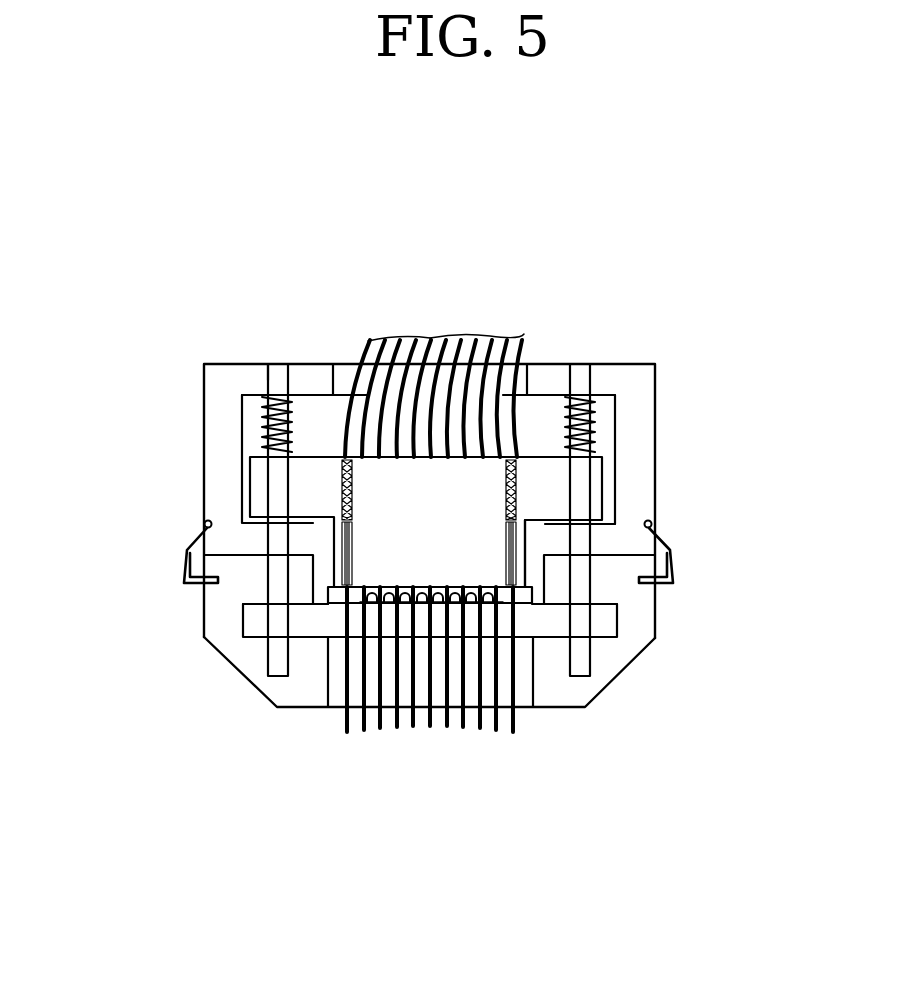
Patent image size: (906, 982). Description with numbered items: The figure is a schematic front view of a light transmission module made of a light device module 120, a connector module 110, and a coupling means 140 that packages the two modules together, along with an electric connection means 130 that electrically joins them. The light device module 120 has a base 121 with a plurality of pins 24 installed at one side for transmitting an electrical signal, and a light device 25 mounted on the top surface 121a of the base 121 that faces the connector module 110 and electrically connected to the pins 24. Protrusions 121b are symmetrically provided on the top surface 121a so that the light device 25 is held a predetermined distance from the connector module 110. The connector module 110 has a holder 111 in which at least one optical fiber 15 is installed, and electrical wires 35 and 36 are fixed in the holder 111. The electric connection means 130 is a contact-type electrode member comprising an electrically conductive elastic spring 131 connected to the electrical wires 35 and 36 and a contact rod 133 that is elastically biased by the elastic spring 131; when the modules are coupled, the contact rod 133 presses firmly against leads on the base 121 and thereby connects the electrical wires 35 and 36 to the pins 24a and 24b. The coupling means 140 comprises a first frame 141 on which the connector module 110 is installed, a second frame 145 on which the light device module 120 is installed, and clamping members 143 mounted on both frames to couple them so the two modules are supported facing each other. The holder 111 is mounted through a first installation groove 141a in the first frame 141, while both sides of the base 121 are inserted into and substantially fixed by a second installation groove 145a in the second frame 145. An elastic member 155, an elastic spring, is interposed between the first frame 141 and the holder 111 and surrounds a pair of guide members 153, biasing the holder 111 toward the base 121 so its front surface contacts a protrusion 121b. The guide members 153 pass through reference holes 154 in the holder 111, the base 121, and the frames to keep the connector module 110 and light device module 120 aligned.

The optical fiber 15 is at (428, 334).
The pins 24 is at (412, 717).
The pin 24a is at (347, 727).
The pin 24b is at (522, 700).
The light device 25 is at (520, 608).
The electrical wire 35 is at (364, 341).
The electrical wire 36 is at (535, 335).
The connector module 110 is at (487, 419).
The holder 111 is at (530, 433).
The light device module 120 is at (422, 695).
The base 121 is at (520, 627).
The top surface 121a is at (307, 596).
The protrusions 121b is at (615, 607).
The electric connection means 130 is at (578, 522).
The elastic spring 131 is at (352, 490).
The contact rod 133 is at (352, 548).
The coupling means 140 is at (167, 544).
The first frame 141 is at (208, 453).
The first installation groove 141a is at (243, 505).
The clamping members 143 is at (180, 558).
The second frame 145 is at (257, 637).
The second installation groove 145a is at (230, 643).
The guide members 153 is at (277, 370).
The reference holes 154 is at (267, 372).
The elastic member 155 is at (282, 410).